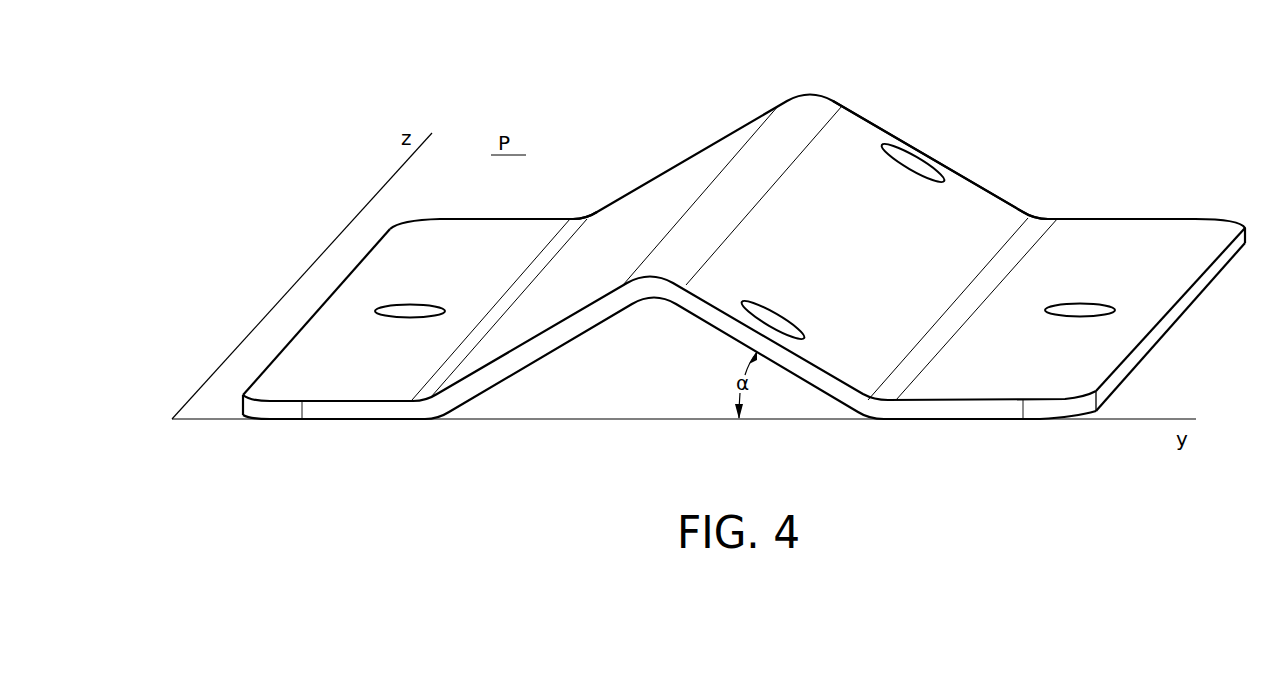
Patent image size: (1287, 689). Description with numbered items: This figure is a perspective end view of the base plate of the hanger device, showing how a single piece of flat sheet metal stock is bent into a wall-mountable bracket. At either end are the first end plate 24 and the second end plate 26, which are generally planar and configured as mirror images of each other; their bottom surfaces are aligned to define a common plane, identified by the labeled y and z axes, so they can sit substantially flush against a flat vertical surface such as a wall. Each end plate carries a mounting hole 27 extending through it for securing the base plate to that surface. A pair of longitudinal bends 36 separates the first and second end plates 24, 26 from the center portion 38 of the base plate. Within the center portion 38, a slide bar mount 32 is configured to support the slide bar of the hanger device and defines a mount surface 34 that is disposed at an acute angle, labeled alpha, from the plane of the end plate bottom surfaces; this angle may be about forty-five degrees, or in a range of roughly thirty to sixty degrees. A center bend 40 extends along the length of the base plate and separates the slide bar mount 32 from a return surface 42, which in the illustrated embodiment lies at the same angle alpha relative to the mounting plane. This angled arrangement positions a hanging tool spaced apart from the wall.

The first end plate 24 is at (1188, 238).
The second end plate 26 is at (368, 372).
The mounting hole 27 is at (398, 312).
The slide bar mount 32 is at (939, 150).
The mount surface 34 is at (873, 251).
The longitudinal bends 36 is at (583, 218).
The center portion 38 is at (861, 112).
The center bend 40 is at (812, 94).
The return surface 42 is at (622, 251).